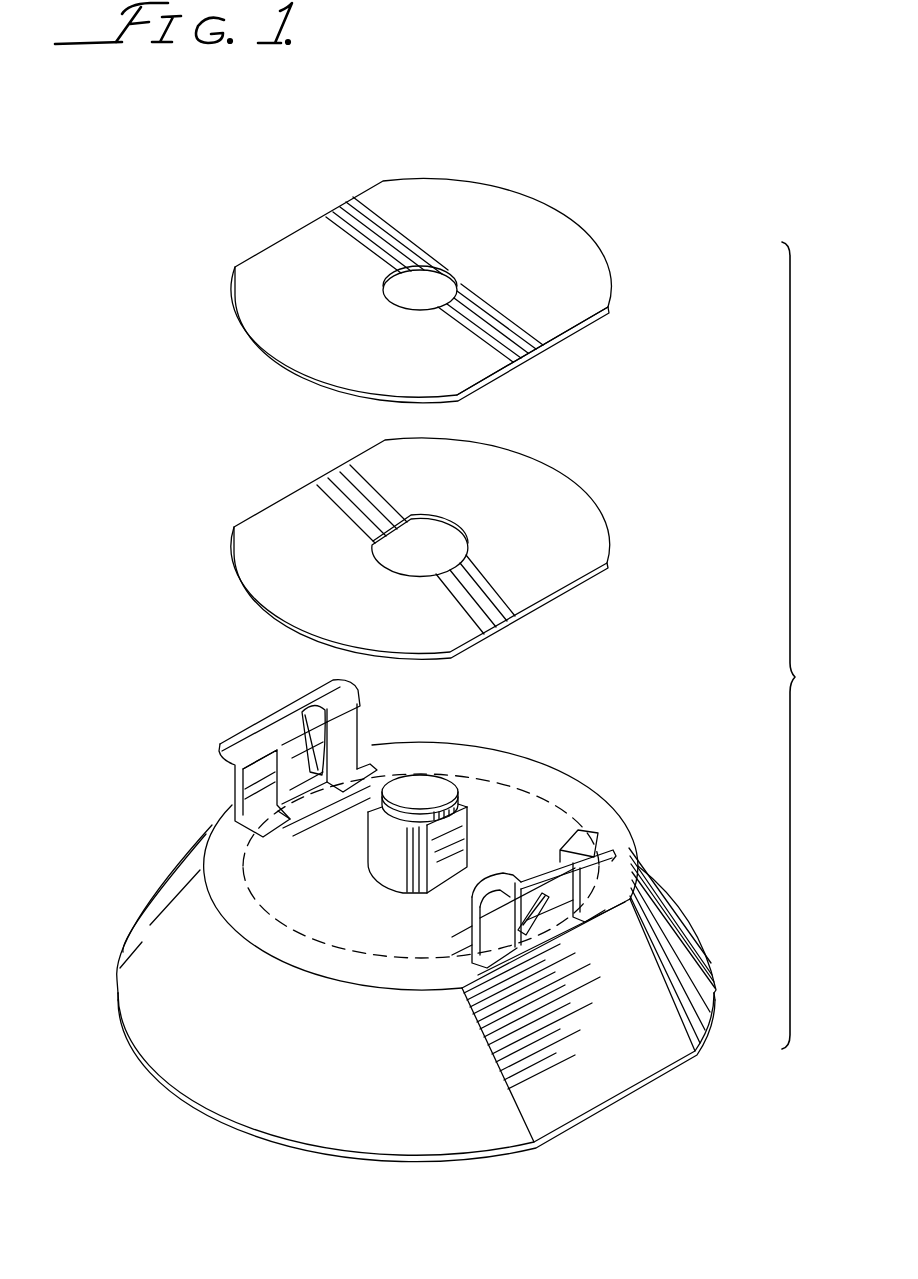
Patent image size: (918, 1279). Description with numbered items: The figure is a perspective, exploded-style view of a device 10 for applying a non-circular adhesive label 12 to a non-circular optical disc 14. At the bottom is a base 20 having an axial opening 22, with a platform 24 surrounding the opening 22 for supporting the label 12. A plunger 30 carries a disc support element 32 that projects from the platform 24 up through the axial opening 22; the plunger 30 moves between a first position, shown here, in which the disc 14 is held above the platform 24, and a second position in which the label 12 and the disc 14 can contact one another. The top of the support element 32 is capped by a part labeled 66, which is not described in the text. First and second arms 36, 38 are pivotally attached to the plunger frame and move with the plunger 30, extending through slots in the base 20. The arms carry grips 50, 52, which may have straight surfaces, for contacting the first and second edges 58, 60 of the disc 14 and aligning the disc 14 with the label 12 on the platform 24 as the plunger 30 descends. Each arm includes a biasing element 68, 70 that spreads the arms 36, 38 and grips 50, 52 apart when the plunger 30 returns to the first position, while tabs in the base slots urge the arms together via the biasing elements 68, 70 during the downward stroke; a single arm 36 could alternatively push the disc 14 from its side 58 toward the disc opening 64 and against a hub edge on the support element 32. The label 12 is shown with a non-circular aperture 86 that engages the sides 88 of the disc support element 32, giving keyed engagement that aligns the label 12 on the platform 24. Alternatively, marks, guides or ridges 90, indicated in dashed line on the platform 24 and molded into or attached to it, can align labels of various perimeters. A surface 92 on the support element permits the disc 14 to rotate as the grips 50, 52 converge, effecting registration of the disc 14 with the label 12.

The device 10 is at (810, 645).
The non-circular adhesive label 12 is at (570, 492).
The non-circular optical disc 14 is at (562, 228).
The base 20 is at (182, 1037).
The axial opening 22 is at (394, 877).
The platform 24 is at (562, 792).
The plunger 30 is at (462, 768).
The disc support element 32 is at (381, 817).
The first arm 36 is at (606, 836).
The second arm 38 is at (230, 737).
The grip 50 is at (578, 826).
The grip 52 is at (357, 709).
The first edge 58 is at (540, 358).
The second edge 60 is at (310, 224).
The disc opening 64 is at (440, 277).
The post cap 66 is at (420, 798).
The biasing element 68 is at (557, 908).
The biasing element 70 is at (288, 735).
The non-circular aperture 86 is at (467, 557).
The sides 88 is at (465, 843).
The ridges 90 is at (270, 915).
The surface 92 is at (463, 799).